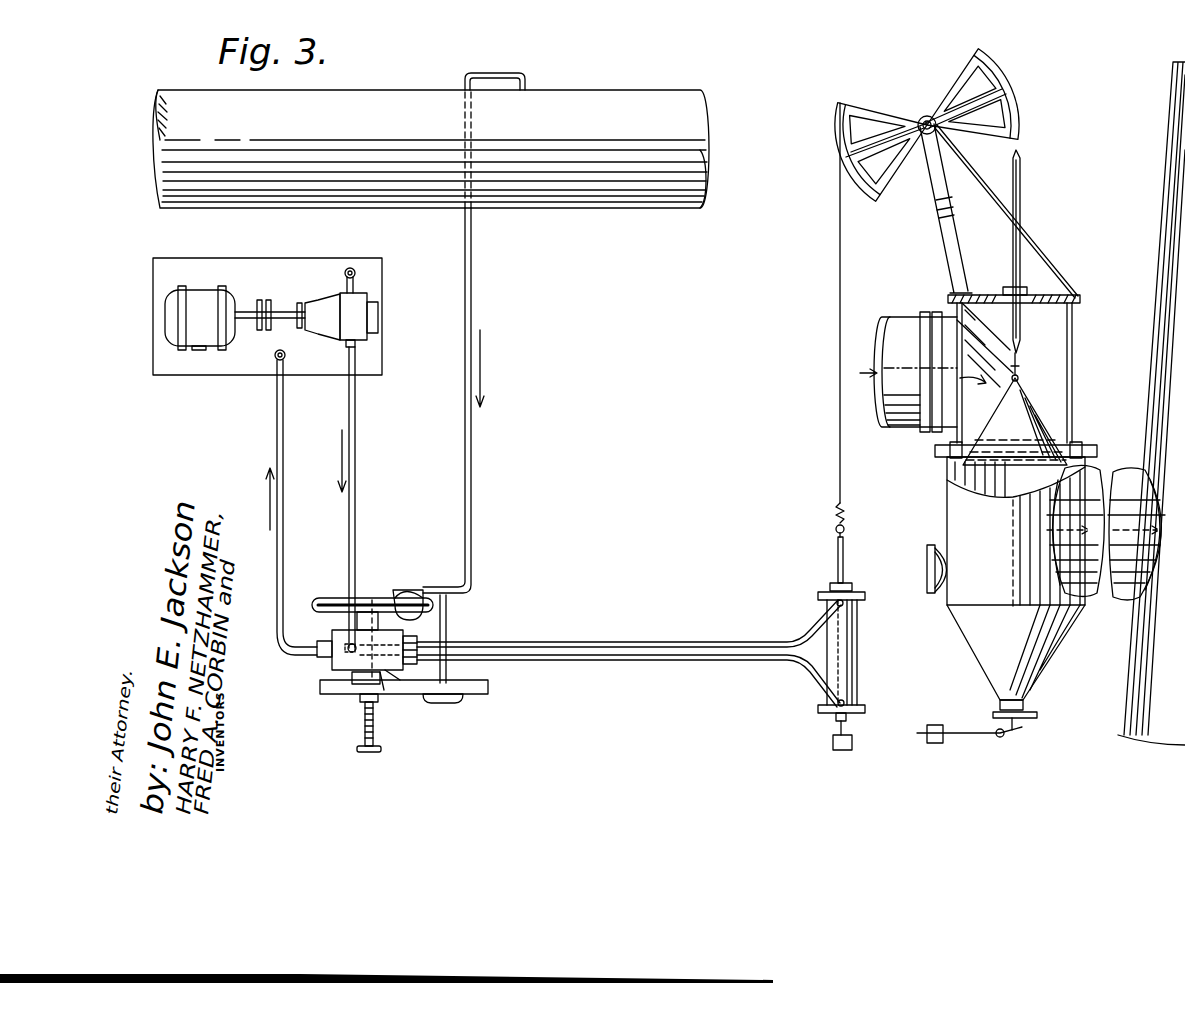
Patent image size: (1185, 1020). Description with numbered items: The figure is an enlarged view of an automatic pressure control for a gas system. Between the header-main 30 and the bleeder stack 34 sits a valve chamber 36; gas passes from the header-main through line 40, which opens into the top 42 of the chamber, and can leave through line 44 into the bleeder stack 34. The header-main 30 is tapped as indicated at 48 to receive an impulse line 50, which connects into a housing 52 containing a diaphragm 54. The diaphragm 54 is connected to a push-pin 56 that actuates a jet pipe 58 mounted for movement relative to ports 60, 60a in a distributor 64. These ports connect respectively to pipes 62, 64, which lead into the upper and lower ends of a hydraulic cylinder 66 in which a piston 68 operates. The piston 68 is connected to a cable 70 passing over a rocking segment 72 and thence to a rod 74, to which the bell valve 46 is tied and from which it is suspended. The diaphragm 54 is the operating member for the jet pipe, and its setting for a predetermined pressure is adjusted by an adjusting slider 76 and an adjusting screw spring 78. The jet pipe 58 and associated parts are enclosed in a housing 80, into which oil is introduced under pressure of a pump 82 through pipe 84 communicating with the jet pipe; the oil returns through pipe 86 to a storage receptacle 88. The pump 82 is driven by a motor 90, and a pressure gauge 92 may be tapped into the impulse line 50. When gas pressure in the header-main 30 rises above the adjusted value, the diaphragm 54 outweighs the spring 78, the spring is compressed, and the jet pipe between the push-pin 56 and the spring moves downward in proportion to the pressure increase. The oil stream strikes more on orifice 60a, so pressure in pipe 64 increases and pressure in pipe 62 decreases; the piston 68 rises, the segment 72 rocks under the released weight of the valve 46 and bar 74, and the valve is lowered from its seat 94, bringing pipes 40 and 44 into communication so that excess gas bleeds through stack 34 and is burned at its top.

The header-main 30 is at (645, 100).
The bleeder stack 34 is at (1171, 231).
The valve chamber 36 is at (960, 513).
The line 40 is at (903, 414).
The top of valve chamber 42 is at (1062, 322).
The line 44 is at (1097, 597).
The bell valve 46 is at (1033, 413).
The tap 48 is at (530, 86).
The impulse line 50 is at (472, 257).
The housing 52 is at (387, 595).
The diaphragm 54 is at (328, 600).
The push-pin 56 is at (377, 600).
The jet pipe 58 is at (385, 674).
The port 60 is at (410, 632).
The port 60a is at (395, 673).
The pipe 62 is at (618, 640).
The pipe 64 is at (428, 597).
The hydraulic cylinder 66 is at (848, 651).
The piston 68 is at (838, 559).
The cable 70 is at (838, 412).
The rocking segment 72 is at (898, 117).
The rod 74 is at (1024, 200).
The adjusting slider 76 is at (362, 753).
The adjusting screw spring 78 is at (360, 678).
The housing 80 is at (337, 663).
The pump 82 is at (352, 313).
The pipe 84 is at (356, 457).
The pipe 86 is at (268, 569).
The storage receptacle 88 is at (222, 367).
The motor 90 is at (188, 326).
The pressure gauge 92 is at (458, 701).
The seat 94 is at (1074, 446).